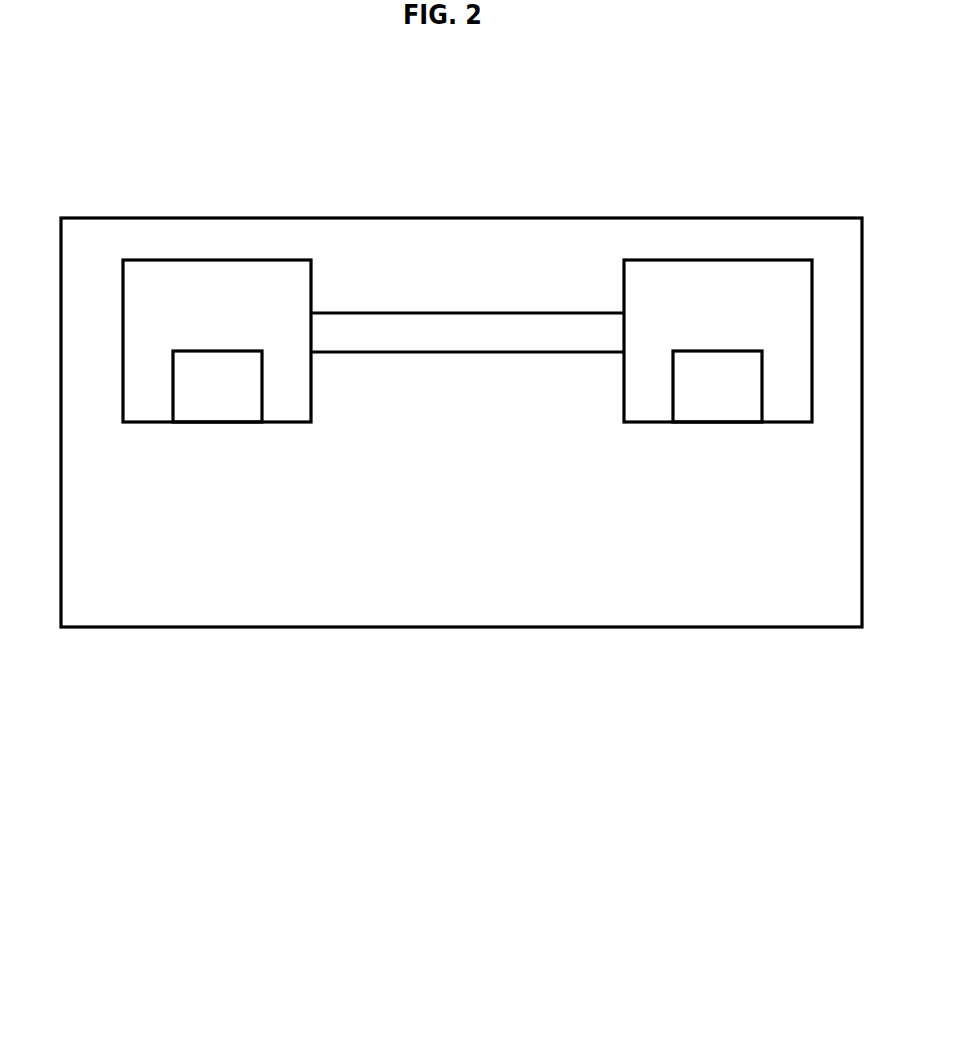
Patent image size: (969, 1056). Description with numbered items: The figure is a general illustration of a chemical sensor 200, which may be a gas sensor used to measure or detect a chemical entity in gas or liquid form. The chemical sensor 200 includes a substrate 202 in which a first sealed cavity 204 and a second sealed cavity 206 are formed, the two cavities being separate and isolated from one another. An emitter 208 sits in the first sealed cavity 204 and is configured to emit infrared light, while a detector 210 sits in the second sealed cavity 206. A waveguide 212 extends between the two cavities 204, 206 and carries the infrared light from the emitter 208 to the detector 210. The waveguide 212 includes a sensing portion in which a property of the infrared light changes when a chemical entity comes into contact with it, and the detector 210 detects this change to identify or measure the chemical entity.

The chemical sensor 200 is at (705, 800).
The substrate 202 is at (493, 568).
The first sealed cavity 204 is at (215, 278).
The second sealed cavity 206 is at (657, 297).
The emitter 208 is at (215, 387).
The detector 210 is at (700, 387).
The waveguide 212 is at (486, 330).